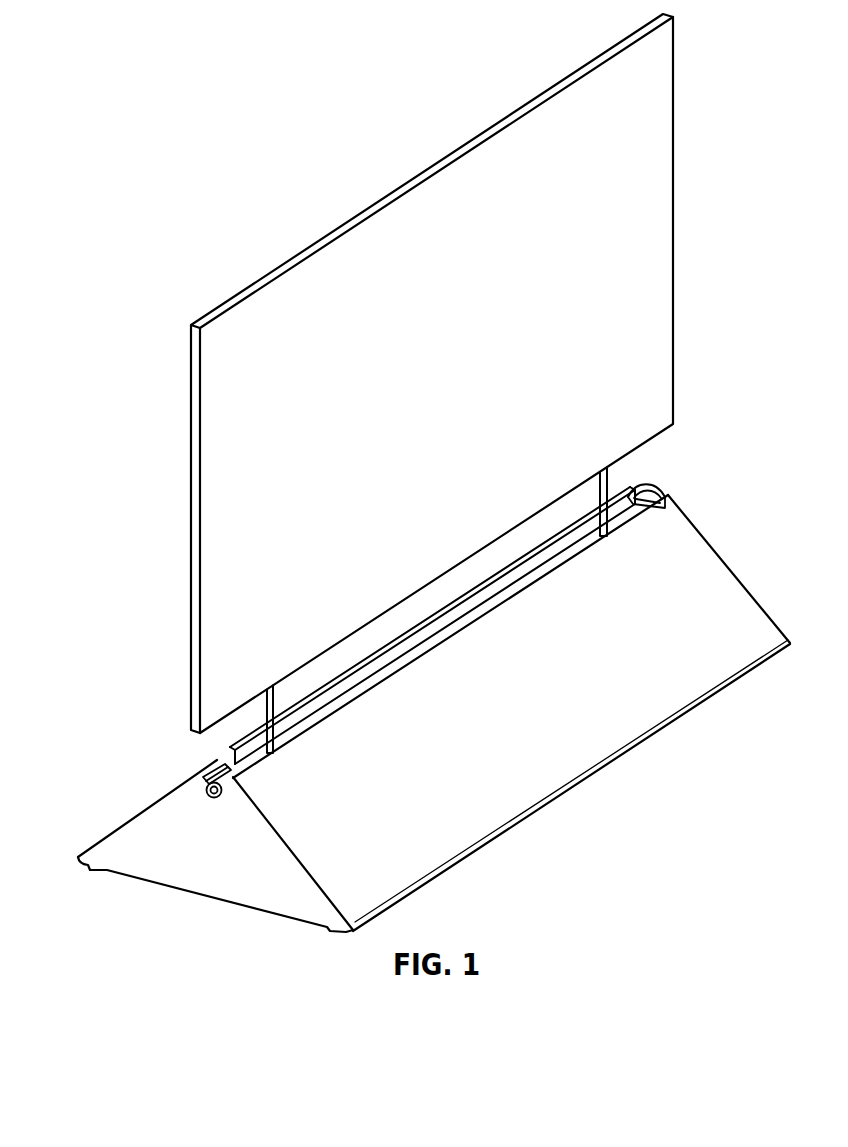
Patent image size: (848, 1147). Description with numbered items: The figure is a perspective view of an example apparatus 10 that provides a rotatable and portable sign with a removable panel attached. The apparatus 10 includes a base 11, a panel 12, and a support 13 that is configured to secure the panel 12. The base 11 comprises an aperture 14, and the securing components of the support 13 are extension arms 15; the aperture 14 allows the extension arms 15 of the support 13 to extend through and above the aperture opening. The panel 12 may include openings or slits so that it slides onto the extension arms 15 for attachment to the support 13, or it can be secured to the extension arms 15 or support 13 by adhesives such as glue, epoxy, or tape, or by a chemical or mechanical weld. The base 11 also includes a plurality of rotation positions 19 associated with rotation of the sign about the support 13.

The apparatus 10 is at (108, 152).
The base 11 is at (650, 714).
The panel 12 is at (653, 110).
The support 13 is at (595, 542).
The aperture 14 is at (655, 505).
The extension arms 15 is at (607, 480).
The rotation positions 19 is at (208, 789).